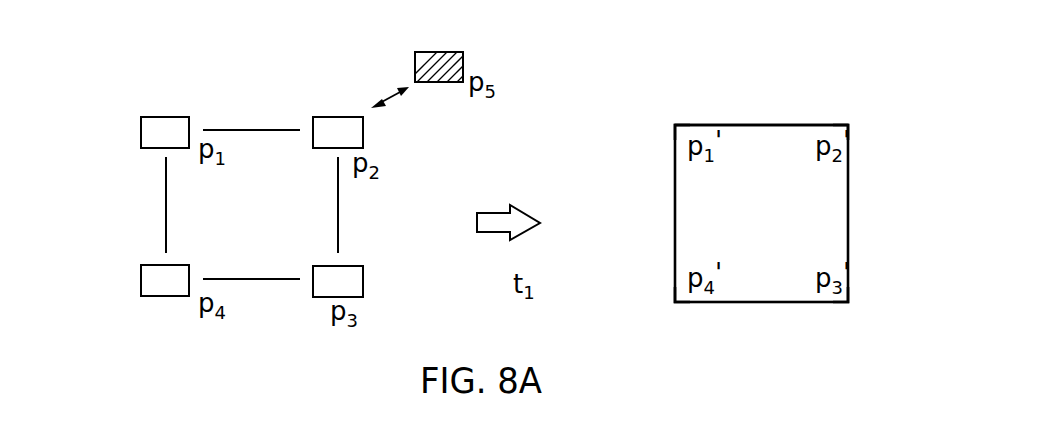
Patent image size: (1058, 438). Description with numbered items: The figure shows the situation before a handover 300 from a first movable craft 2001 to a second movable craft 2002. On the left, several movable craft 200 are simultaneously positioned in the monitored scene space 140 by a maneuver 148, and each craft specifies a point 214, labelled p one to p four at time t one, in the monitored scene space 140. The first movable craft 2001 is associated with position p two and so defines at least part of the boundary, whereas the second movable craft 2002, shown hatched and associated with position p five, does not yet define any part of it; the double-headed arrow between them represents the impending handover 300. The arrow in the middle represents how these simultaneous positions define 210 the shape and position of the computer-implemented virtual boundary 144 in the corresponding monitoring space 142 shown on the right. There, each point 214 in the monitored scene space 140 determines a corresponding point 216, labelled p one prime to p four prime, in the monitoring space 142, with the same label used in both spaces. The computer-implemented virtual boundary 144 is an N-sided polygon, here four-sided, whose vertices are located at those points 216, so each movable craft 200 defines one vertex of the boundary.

The monitored scene space 140 is at (242, 105).
The maneuver 148 is at (133, 185).
The movable craft 200 is at (170, 117).
The first movable craft 2001 is at (347, 117).
The second movable craft 2002 is at (440, 52).
The point 214 is at (158, 132).
The handover 300 is at (393, 92).
The definition 210 is at (487, 212).
The monitoring space 142 is at (706, 102).
The computer-implemented virtual boundary 144 is at (772, 124).
The corresponding point 216 is at (848, 124).